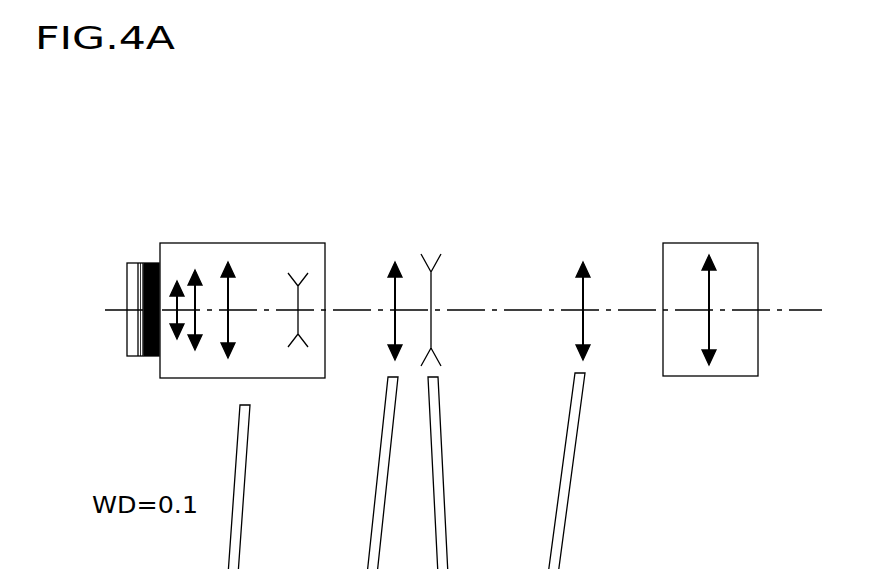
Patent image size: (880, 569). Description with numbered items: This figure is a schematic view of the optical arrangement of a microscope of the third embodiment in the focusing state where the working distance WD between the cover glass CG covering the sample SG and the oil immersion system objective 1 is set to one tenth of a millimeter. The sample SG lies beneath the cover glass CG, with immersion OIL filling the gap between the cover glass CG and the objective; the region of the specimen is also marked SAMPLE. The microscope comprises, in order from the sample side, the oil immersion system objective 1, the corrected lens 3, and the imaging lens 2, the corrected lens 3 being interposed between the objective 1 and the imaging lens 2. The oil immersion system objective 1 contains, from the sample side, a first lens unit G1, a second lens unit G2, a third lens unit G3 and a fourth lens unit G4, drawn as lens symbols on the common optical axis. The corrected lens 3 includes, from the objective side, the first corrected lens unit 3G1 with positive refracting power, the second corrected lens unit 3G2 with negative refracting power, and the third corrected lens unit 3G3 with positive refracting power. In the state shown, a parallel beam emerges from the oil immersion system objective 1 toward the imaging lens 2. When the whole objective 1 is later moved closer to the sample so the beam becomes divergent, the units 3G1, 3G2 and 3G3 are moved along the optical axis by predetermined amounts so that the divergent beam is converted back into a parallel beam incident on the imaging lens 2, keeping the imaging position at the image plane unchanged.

The oil immersion system objective 1 is at (251, 355).
The imaging lens 2 is at (727, 376).
The corrected lens 3 is at (595, 193).
The first lens unit G1 is at (180, 275).
The second lens unit G2 is at (199, 263).
The third lens unit G3 is at (228, 258).
The fourth lens unit G4 is at (301, 272).
The first corrected lens unit 3G1 is at (400, 262).
The second corrected lens unit 3G2 is at (440, 257).
The third corrected lens unit 3G3 is at (578, 263).
The sample SG is at (130, 263).
The cover glass CG is at (140, 263).
The sample SAMPLE is at (133, 357).
The immersion oil OIL is at (150, 357).